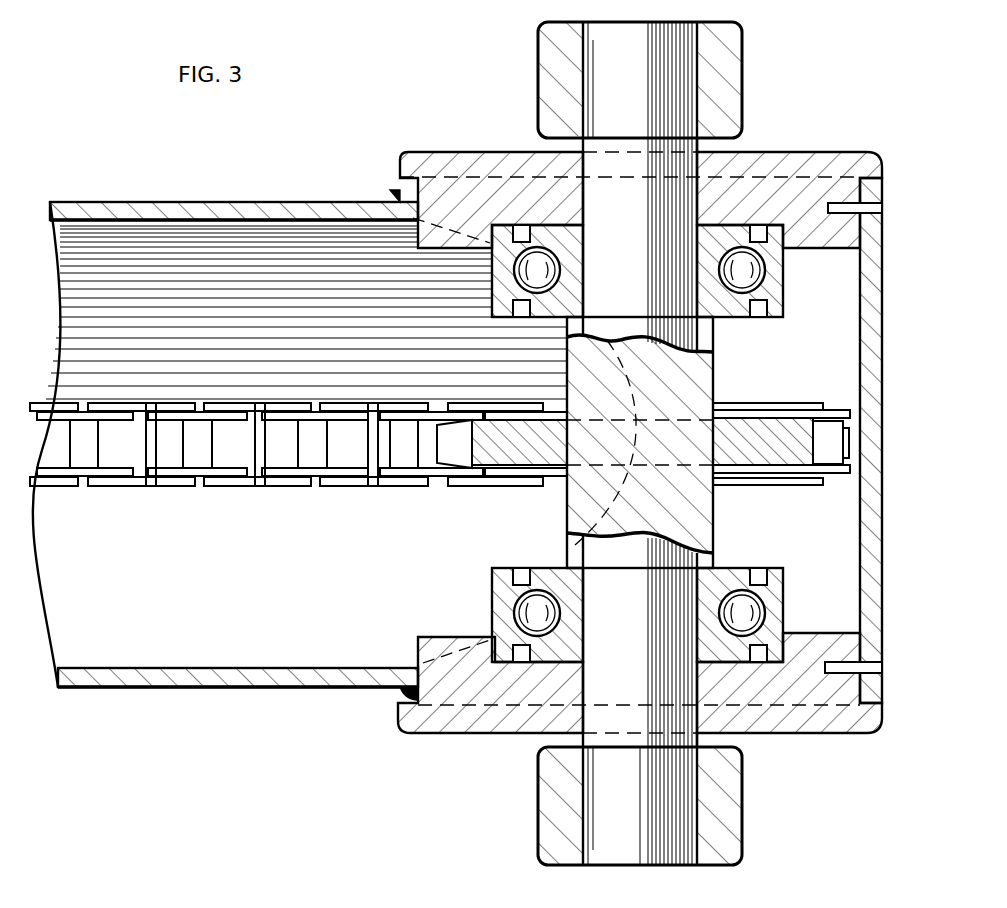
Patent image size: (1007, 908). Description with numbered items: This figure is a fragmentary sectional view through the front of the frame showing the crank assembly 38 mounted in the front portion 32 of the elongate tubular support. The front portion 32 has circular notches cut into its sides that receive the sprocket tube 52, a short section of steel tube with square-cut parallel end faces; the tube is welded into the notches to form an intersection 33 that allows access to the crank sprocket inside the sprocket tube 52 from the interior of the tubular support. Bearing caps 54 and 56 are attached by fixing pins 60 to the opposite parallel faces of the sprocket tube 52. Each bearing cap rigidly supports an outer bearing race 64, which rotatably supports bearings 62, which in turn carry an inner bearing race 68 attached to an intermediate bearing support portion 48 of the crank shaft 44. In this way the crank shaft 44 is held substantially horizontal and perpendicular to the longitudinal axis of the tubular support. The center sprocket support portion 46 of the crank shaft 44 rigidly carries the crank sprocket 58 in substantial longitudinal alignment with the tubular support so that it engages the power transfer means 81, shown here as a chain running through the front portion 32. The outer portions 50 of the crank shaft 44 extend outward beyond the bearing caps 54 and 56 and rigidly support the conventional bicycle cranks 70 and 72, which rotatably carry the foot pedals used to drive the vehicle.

The front portion 32 is at (241, 203).
The intersection 33 is at (625, 503).
The crank assembly 38 is at (460, 82).
The crank shaft 44 is at (645, 209).
The center sprocket support portion 46 is at (685, 370).
The intermediate bearing support portions 48 is at (682, 218).
The outer portions 50 is at (668, 835).
The sprocket tube 52 is at (884, 358).
The bearing cap 54 is at (805, 737).
The bearing cap 56 is at (830, 152).
The crank sprocket 58 is at (507, 450).
The fixing pins 60 is at (876, 207).
The bearings 62 is at (540, 250).
The outer bearing races 64 is at (490, 227).
The inner bearing races 68 is at (530, 317).
The bicycle crank 70 is at (740, 815).
The bicycle crank 72 is at (740, 47).
The power transfer means 81 is at (270, 490).